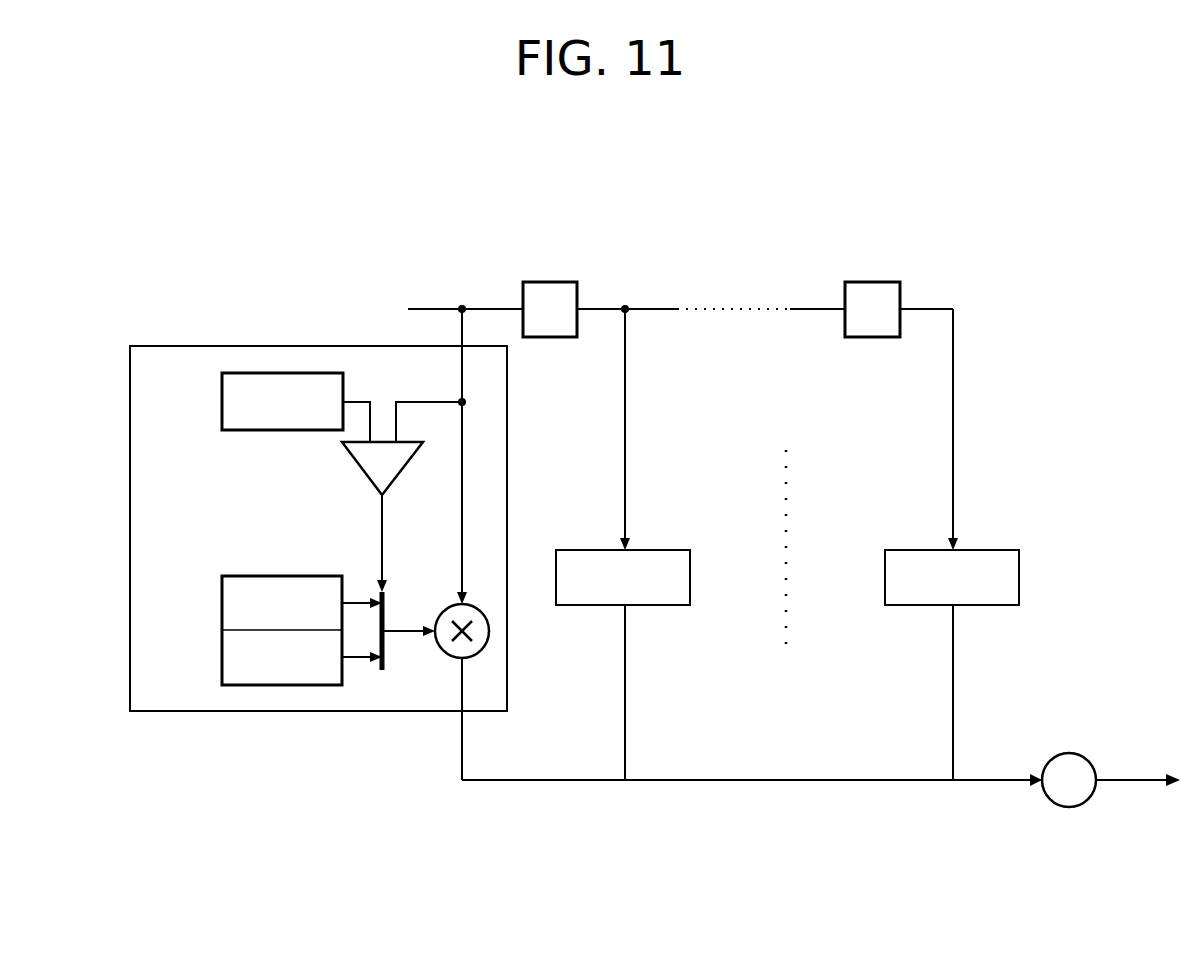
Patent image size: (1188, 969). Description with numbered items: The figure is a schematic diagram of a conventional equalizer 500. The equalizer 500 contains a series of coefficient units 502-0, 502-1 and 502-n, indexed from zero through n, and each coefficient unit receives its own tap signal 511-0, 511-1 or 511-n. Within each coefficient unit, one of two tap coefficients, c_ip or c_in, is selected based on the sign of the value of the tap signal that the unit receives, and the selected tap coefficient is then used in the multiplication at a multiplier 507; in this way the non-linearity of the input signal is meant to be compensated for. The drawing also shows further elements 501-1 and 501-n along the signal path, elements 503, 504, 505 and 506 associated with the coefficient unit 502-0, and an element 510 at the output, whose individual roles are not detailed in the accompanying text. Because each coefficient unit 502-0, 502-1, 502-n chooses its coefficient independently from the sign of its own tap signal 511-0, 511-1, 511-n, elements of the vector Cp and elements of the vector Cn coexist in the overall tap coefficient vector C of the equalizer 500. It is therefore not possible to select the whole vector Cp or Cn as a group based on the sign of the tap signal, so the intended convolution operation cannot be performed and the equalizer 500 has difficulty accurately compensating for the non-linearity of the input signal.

The equalizer 500 is at (1105, 181).
The delay element 501-1 is at (550, 282).
The delay element 501-n is at (877, 282).
The coefficient unit 502-0 is at (343, 712).
The coefficient unit 502-1 is at (653, 605).
The coefficient unit 502-n is at (985, 605).
The comparator 503 is at (405, 464).
The coefficient storage 504 is at (283, 576).
The selector 505 is at (386, 648).
The threshold setting unit 506 is at (222, 402).
The multiplier 507 is at (437, 616).
The adder 510 is at (1082, 807).
The tap signal 511-0 is at (462, 372).
The tap signal 511-1 is at (625, 437).
The tap signal 511-n is at (953, 437).